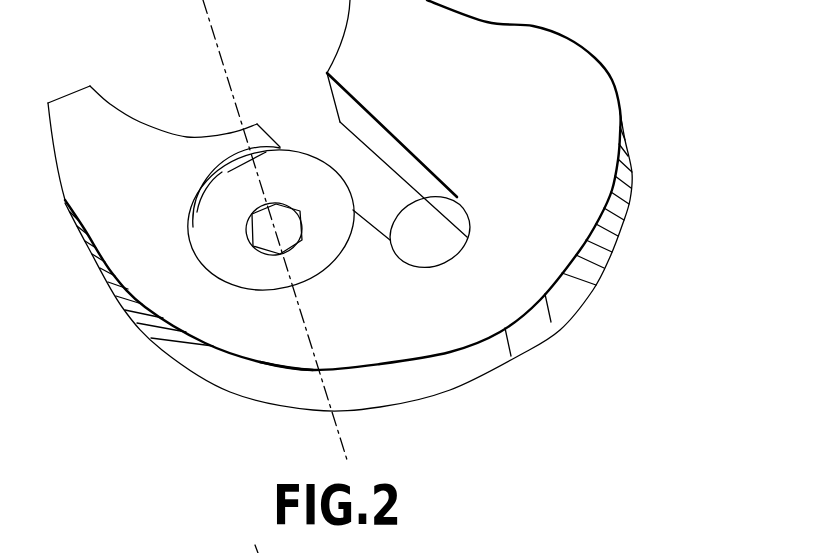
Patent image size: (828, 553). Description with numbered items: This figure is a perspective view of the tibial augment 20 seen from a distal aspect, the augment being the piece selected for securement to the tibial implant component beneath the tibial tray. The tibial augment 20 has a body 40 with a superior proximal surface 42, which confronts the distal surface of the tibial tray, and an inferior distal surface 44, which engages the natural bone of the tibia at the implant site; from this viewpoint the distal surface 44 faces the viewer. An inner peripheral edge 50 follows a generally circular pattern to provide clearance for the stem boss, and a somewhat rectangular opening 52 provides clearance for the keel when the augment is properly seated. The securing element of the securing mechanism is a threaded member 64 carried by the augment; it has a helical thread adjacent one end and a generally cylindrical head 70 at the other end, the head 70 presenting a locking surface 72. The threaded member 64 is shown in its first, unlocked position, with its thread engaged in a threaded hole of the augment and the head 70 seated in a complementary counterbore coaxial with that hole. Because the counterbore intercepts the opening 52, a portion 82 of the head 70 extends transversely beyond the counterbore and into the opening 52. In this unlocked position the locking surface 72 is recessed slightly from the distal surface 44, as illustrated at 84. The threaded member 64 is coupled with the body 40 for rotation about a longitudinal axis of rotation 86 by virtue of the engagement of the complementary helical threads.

The tibial augment 20 is at (378, 228).
The body 40 is at (583, 143).
The proximal surface 42 is at (460, 380).
The distal surface 44 is at (560, 237).
The inner peripheral edge 50 is at (227, 130).
The opening 52 is at (458, 197).
The threaded member 64 is at (356, 168).
The head 70 is at (300, 258).
The locking surface 72 is at (208, 229).
The portion 82 is at (293, 153).
The recess 84 is at (222, 178).
The axis of rotation 86 is at (313, 350).